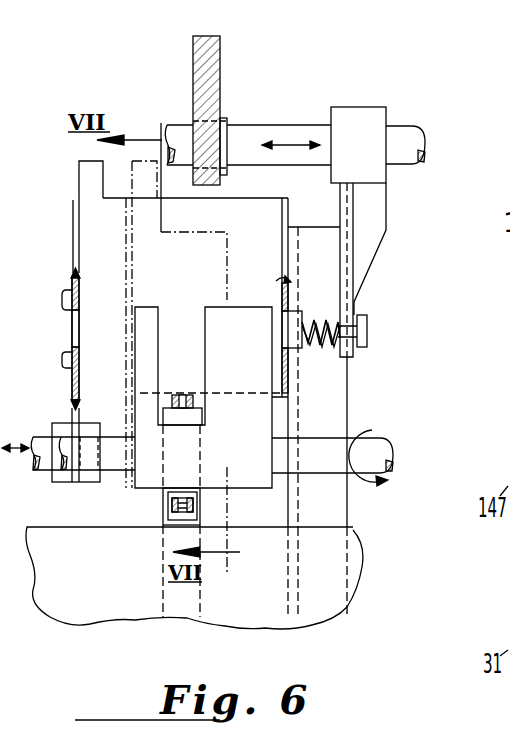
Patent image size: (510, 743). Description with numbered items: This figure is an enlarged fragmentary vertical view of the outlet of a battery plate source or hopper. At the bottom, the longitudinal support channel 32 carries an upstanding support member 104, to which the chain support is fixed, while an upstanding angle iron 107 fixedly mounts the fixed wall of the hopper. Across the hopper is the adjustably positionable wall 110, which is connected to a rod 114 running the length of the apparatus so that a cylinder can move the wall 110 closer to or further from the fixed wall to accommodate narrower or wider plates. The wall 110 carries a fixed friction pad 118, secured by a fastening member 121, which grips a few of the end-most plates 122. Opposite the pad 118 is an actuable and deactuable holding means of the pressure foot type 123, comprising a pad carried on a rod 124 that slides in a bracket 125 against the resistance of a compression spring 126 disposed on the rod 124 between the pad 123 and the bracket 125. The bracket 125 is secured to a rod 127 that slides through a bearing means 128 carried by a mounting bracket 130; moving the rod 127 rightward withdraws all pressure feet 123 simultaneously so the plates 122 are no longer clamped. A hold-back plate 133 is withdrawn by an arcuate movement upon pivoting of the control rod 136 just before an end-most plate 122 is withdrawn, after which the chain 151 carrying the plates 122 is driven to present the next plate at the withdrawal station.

The support channel 32 is at (80, 563).
The upstanding support member 104 is at (163, 505).
The upstanding angle iron 107 is at (335, 507).
The adjustably positionable wall 110 is at (73, 379).
The rod 114 is at (40, 440).
The friction pad 118 is at (77, 338).
The fastening member 121 is at (68, 325).
The plate 122 is at (95, 217).
The pressure foot holding means 123 is at (289, 330).
The rod 124 is at (328, 348).
The bracket 125 is at (352, 360).
The compression spring 126 is at (315, 318).
The rod 127 is at (402, 138).
The bearing means 128 is at (228, 118).
The mounting bracket 130 is at (213, 67).
The hold-back plate 133 is at (217, 355).
The control rod 136 is at (380, 453).
The chain 151 is at (183, 395).